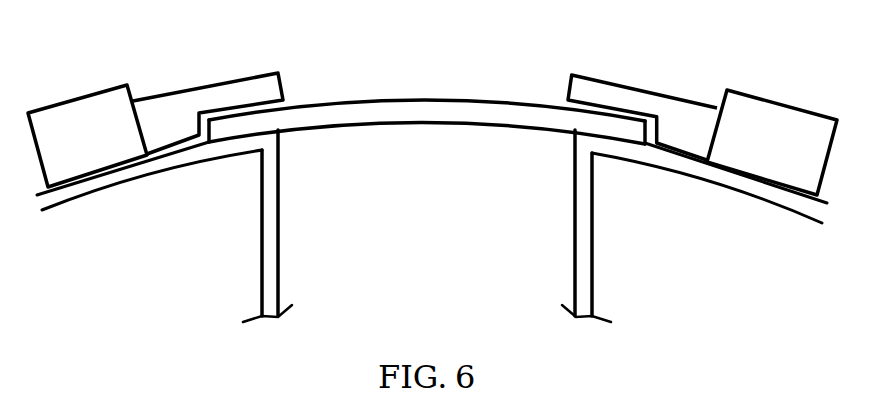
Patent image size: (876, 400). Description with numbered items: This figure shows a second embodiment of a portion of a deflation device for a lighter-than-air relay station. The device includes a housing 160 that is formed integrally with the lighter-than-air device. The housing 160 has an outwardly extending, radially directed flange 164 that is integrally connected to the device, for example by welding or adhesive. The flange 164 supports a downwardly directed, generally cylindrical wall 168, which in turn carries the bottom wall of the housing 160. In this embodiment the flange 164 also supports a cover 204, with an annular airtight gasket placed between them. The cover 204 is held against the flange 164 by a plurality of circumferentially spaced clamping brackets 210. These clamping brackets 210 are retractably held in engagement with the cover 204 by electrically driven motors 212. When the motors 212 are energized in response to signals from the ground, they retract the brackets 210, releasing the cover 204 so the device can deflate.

The cover 204 is at (420, 113).
The clamping brackets 210 is at (225, 95).
The electrically driven motors 212 is at (82, 117).
The flange 164 is at (98, 185).
The housing 160 is at (259, 197).
The cylindrical wall 168 is at (269, 233).